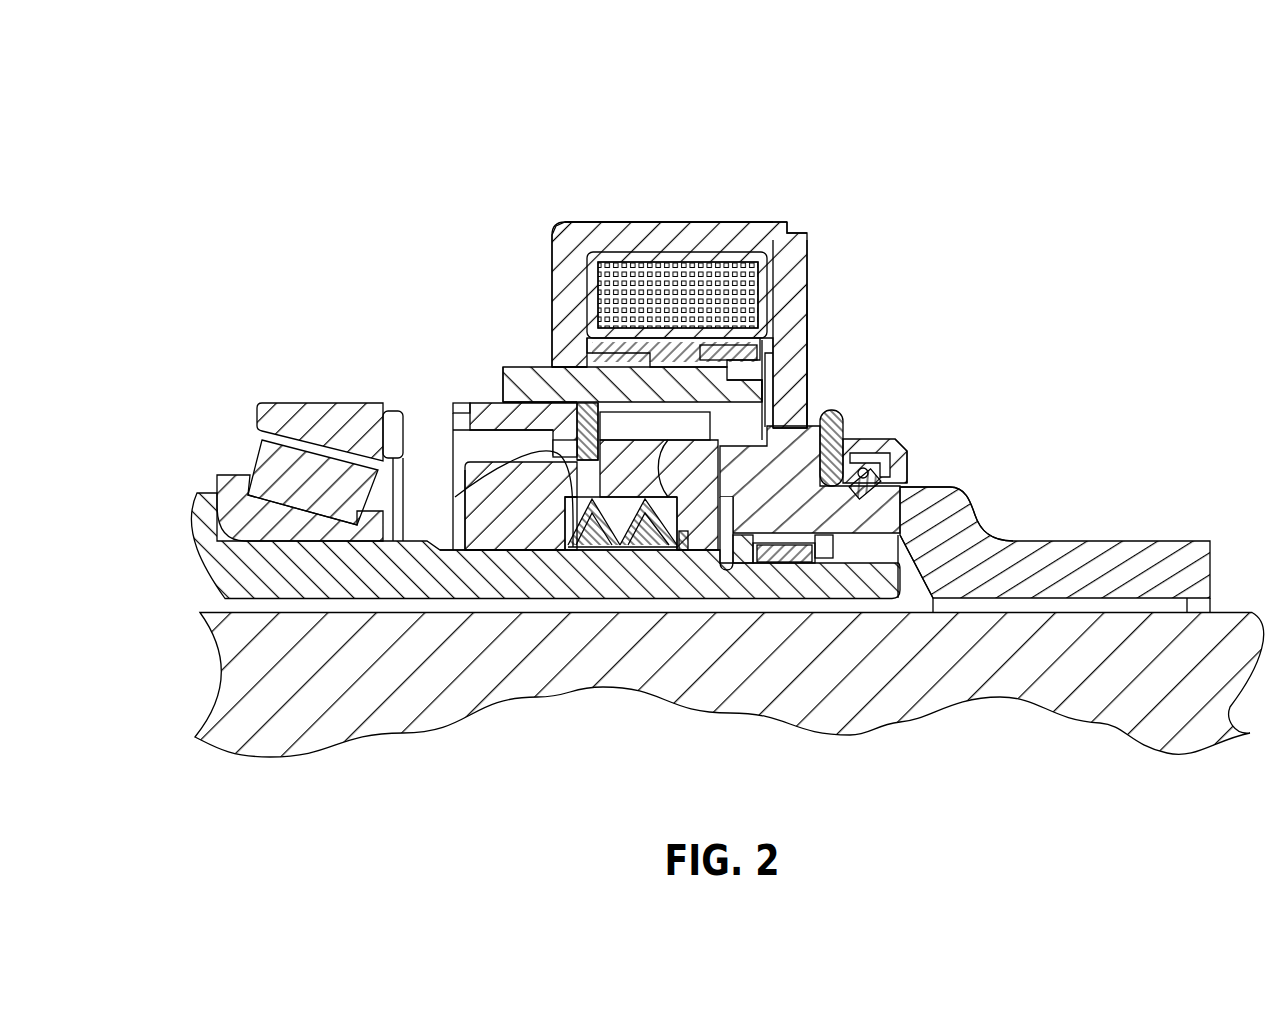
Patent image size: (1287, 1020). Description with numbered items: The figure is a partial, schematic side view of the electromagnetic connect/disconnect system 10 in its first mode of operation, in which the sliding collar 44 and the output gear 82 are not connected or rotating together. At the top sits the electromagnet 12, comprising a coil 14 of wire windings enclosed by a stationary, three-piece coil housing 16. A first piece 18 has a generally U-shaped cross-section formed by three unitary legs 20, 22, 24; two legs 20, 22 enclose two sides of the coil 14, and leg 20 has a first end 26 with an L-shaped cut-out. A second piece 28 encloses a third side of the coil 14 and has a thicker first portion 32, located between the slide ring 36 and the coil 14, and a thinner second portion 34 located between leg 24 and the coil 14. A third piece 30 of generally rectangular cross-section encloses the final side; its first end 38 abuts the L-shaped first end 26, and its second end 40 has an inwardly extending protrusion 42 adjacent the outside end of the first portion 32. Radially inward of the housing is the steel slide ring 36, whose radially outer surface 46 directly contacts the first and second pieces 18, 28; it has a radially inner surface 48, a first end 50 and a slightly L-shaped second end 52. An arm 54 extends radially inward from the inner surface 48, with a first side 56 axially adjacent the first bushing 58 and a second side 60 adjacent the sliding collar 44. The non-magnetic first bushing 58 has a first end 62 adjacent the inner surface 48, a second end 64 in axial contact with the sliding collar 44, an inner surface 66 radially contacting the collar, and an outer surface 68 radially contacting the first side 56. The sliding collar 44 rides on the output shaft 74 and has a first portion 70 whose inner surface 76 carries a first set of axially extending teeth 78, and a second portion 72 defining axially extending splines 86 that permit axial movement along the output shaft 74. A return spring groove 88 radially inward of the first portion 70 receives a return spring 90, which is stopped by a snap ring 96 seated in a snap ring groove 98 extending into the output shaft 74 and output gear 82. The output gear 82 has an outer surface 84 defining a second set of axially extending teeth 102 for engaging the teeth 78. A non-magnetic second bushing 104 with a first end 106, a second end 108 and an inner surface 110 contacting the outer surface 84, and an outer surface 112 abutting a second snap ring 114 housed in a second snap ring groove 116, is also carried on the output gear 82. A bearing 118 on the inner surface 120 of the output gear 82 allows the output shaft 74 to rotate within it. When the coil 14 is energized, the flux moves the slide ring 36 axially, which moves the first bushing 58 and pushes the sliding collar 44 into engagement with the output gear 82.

The electromagnetic connect/disconnect system 10 is at (464, 112).
The electromagnet 12 is at (560, 225).
The coil 14 is at (715, 285).
The coil housing 16 is at (552, 258).
The first piece 18 is at (628, 235).
The leg 20 is at (680, 222).
The leg 22 is at (560, 283).
The leg 24 is at (550, 353).
The first end 26 is at (792, 222).
The second piece 28 is at (627, 352).
The third piece 30 is at (807, 310).
The first portion 32 is at (727, 352).
The second portion 34 is at (590, 345).
The slide ring 36 is at (636, 395).
The first end 38 is at (790, 255).
The second end 40 is at (810, 340).
The inwardly extending protrusion 42 is at (775, 360).
The sliding collar 44 is at (531, 492).
The radially outer surface 46 is at (517, 392).
The radially inner surface 48 is at (470, 440).
The first end 50 is at (462, 408).
The second end 52 is at (740, 390).
The arm 54 is at (505, 470).
The first side 56 is at (570, 422).
The first bushing 58 is at (598, 420).
The second side 60 is at (570, 548).
The first end 62 is at (566, 405).
The second end 64 is at (572, 510).
The inner surface 66 is at (598, 448).
The outer surface 68 is at (530, 432).
The first portion 70 is at (672, 439).
The second portion 72 is at (476, 519).
The output shaft 74 is at (215, 575).
The inner surface 76 is at (690, 468).
The first set of axially extending teeth 78 is at (688, 450).
The output gear 82 is at (1100, 540).
The outer surface 84 is at (945, 488).
The first set of axially extending splines 86 is at (518, 555).
The return spring groove 88 is at (620, 510).
The return spring 90 is at (630, 540).
The snap ring 96 is at (688, 535).
The snap ring groove 98 is at (686, 552).
The second set of axially extending teeth 102 is at (740, 452).
The second bushing 104 is at (850, 438).
The first end 106 is at (838, 412).
The second end 108 is at (830, 487).
The inner surface 110 is at (820, 456).
The outer surface 112 is at (888, 460).
The second snap ring 114 is at (900, 445).
The second snap ring groove 116 is at (880, 490).
The bearing 118 is at (790, 562).
The inner surface 120 is at (912, 580).